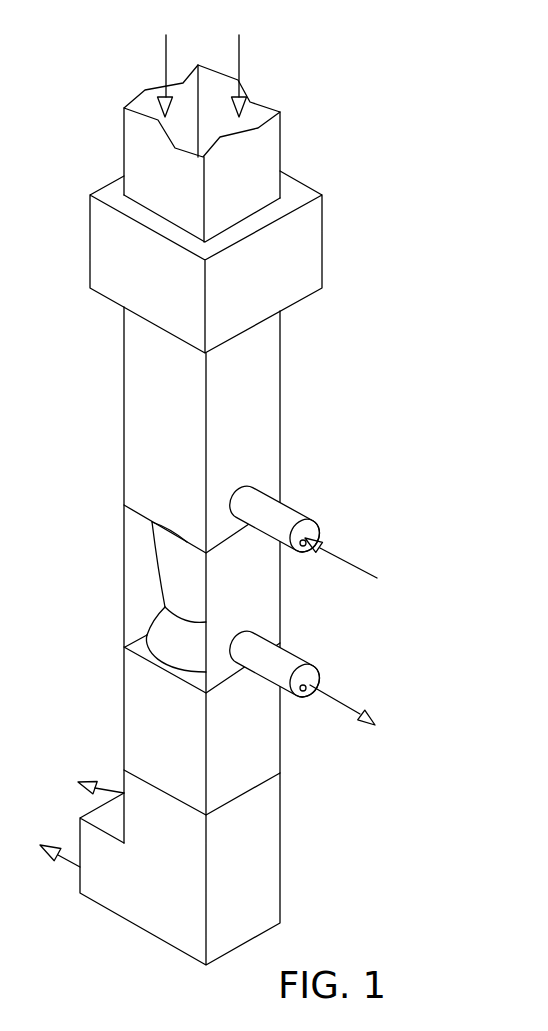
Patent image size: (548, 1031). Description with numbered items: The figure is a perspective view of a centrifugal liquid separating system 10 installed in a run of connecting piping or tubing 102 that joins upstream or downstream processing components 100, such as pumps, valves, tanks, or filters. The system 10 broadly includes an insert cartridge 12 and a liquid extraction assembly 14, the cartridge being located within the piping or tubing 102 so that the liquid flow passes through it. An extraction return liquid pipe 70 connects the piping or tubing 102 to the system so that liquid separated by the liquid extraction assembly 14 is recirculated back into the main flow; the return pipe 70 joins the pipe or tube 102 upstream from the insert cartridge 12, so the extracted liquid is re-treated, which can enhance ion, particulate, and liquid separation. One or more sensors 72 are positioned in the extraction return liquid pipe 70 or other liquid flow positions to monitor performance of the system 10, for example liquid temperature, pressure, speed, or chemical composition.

The centrifugal liquid separating system 10 is at (252, 500).
The insert cartridge 12 is at (301, 616).
The liquid extraction assembly 14 is at (342, 658).
The extraction return liquid pipe 70 is at (310, 488).
The sensors 72 is at (303, 550).
The upstream or downstream processing components 100 is at (343, 216).
The piping or tubing 102 is at (320, 372).